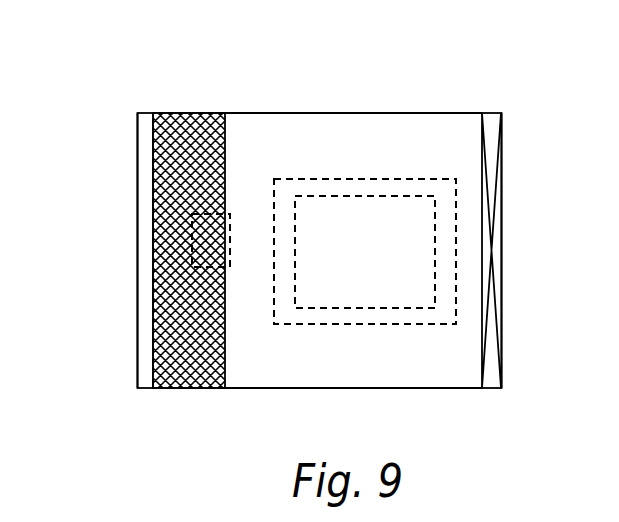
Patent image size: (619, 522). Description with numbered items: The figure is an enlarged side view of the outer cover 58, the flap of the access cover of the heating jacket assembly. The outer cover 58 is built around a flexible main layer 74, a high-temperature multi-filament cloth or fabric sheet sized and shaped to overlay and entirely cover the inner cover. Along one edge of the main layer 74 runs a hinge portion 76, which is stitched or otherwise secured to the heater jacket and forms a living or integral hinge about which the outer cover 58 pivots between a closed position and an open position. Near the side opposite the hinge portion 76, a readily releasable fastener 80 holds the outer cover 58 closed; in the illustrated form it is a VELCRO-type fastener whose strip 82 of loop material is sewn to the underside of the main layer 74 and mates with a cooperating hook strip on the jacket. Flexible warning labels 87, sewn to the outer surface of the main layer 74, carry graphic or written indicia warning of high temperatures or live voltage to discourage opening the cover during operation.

The outer cover 58 is at (101, 80).
The main layer 74 is at (322, 112).
The hinge portion 76 is at (498, 225).
The releasable fastener 80 is at (181, 108).
The strip of loop material 82 is at (153, 167).
The warning labels 87 is at (240, 214).